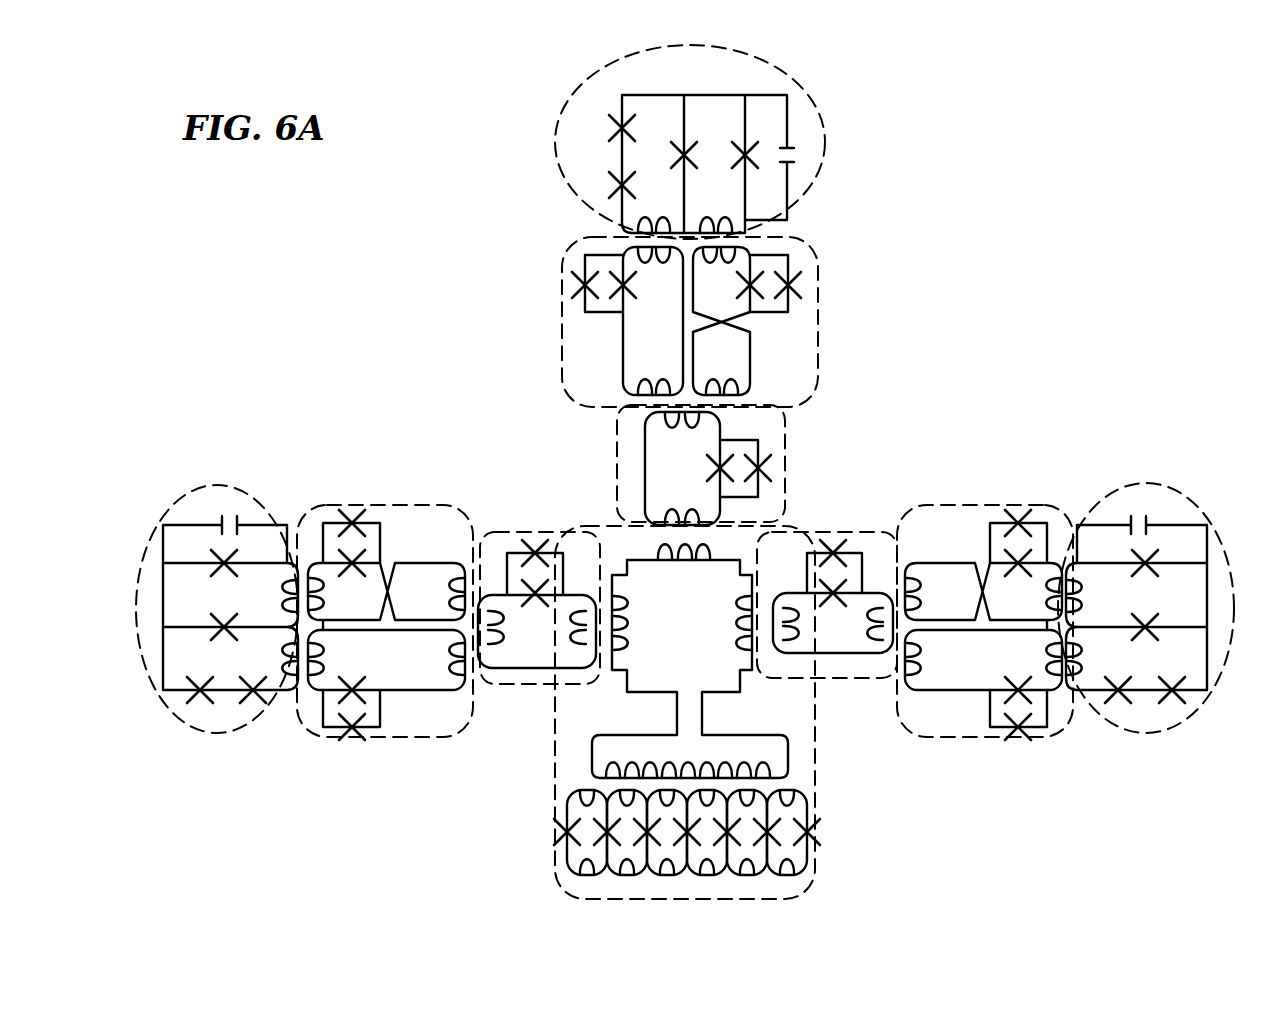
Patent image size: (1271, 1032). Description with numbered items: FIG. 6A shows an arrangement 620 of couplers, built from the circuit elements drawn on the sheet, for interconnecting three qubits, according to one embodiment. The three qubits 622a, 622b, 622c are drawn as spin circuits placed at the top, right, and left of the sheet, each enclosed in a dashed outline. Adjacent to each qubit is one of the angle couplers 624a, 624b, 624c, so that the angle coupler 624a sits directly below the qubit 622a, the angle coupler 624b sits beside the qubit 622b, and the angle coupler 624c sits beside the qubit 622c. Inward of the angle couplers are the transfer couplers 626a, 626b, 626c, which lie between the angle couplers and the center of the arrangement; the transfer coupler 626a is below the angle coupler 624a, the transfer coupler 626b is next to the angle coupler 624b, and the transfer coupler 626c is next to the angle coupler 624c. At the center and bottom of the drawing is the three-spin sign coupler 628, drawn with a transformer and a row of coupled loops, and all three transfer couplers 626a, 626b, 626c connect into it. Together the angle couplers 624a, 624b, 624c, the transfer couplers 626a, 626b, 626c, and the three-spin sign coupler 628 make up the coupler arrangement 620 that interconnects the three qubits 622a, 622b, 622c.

The arrangement of couplers 620 is at (1006, 150).
The qubit 622a is at (892, 161).
The qubit 622b is at (1235, 486).
The qubit 622c is at (212, 482).
The angle coupler 624a is at (905, 356).
The angle coupler 624b is at (1012, 484).
The angle coupler 624c is at (403, 484).
The transfer coupler 626a is at (786, 440).
The transfer coupler 626b is at (849, 530).
The transfer coupler 626c is at (555, 516).
The 3-spin sign coupler 628 is at (815, 778).